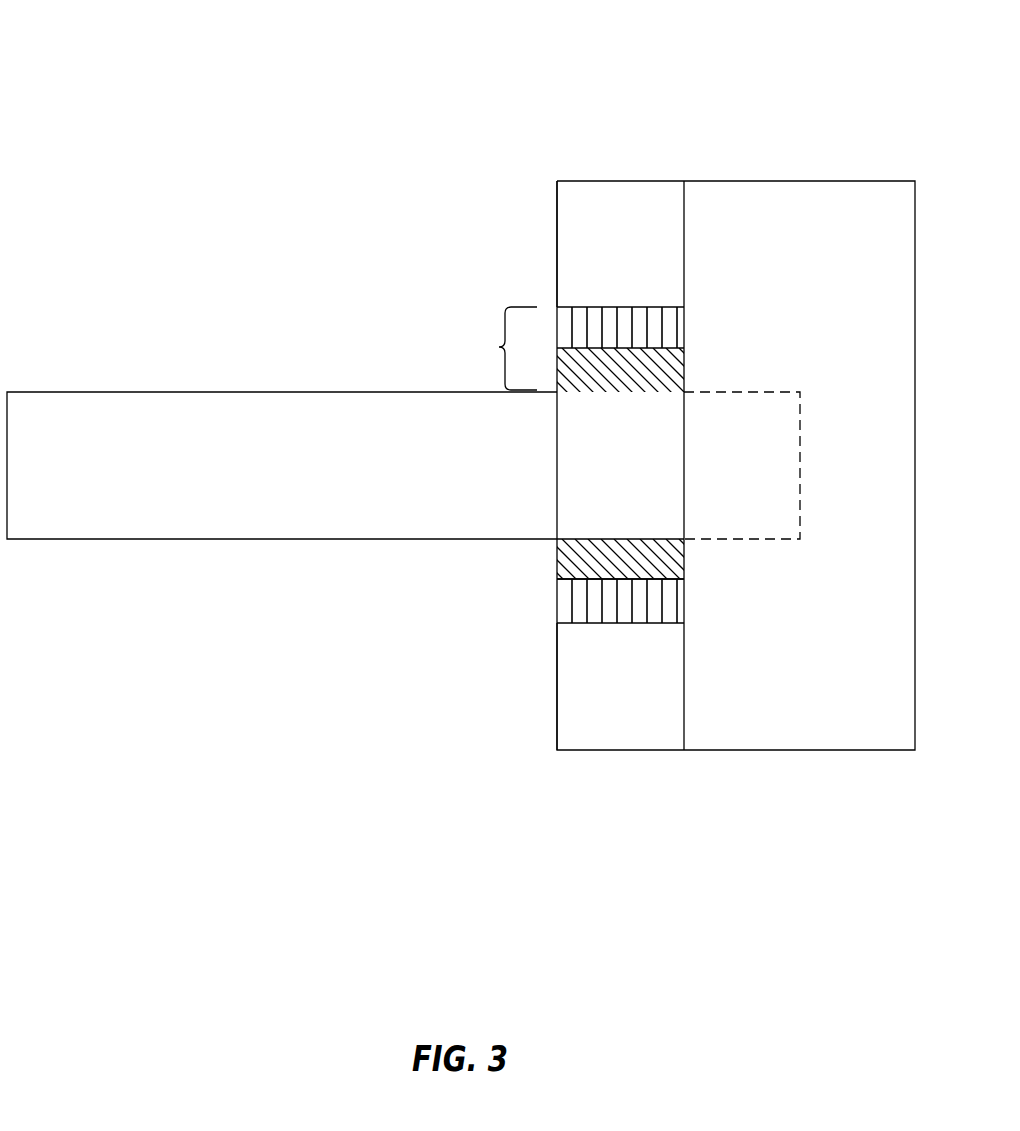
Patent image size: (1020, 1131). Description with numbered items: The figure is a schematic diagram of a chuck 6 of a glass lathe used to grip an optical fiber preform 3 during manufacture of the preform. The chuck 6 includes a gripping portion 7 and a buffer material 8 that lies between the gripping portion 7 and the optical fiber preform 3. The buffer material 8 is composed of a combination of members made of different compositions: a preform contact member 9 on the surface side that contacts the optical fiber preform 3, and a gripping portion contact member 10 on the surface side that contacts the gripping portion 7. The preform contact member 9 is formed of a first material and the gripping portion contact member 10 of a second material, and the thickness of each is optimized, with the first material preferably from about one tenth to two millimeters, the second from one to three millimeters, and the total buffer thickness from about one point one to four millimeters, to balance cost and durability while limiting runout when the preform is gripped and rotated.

The optical fiber preform 3 is at (190, 410).
The chuck 6 is at (703, 777).
The gripping portion 7 is at (620, 207).
The buffer material 8 is at (499, 347).
The preform contact member 9 is at (620, 540).
The gripping portion contact member 10 is at (620, 623).